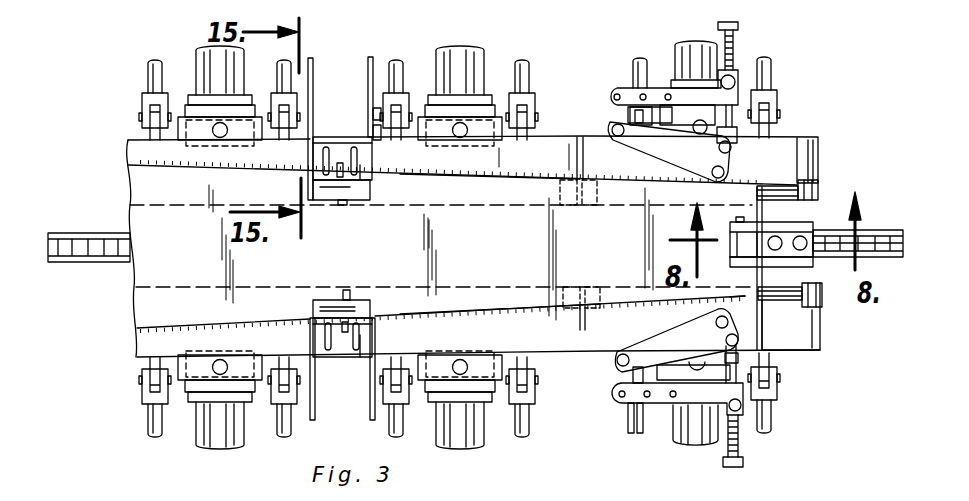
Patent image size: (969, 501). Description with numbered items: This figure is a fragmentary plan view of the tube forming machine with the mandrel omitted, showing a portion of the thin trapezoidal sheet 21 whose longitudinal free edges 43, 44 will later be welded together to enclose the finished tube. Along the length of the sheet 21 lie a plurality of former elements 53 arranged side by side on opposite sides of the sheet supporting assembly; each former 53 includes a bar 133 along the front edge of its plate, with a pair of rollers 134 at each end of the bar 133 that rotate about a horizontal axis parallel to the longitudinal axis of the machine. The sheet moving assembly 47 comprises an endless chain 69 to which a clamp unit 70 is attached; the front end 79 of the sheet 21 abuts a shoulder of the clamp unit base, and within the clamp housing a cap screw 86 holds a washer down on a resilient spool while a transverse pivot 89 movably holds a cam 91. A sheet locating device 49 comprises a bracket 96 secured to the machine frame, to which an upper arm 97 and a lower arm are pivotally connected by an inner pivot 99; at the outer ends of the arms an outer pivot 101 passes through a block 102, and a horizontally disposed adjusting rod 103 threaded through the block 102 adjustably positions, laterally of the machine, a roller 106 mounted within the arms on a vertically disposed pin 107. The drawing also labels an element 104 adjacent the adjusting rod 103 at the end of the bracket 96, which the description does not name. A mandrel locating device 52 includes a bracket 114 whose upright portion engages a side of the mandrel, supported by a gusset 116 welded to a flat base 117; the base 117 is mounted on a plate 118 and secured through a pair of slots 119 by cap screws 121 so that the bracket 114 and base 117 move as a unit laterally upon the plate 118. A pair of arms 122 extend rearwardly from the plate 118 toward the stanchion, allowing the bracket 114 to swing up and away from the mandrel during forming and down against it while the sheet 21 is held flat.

The sheet 21 is at (152, 307).
The longitudinal free edge 43 is at (532, 176).
The longitudinal free edge 44 is at (545, 315).
The sheet moving assembly 47 is at (838, 198).
The sheet locating device 49 is at (715, 240).
The mandrel locating device 52 is at (345, 234).
The former element 53 is at (142, 156).
The endless chain 69 is at (83, 245).
The clamp unit 70 is at (820, 270).
The front end 79 is at (752, 300).
The cap screw 86 is at (776, 245).
The transverse pivot 89 is at (742, 218).
The cam 91 is at (732, 250).
The bracket 96 is at (705, 78).
The upper arm 97 is at (652, 144).
The inner pivot 99 is at (613, 128).
The outer pivot 101 is at (733, 146).
The block 102 is at (703, 153).
The adjusting rod 103 is at (738, 30).
The screw pivot 104 is at (736, 80).
The roller 106 is at (716, 180).
The pin 107 is at (732, 176).
The bracket 114 is at (338, 190).
The gusset 116 is at (347, 176).
The flat base 117 is at (364, 171).
The plate 118 is at (345, 136).
The slot 119 is at (325, 148).
The cap screw 121 is at (350, 248).
The arm 122 is at (344, 234).
The bar 133 is at (806, 330).
The roller 134 is at (580, 206).